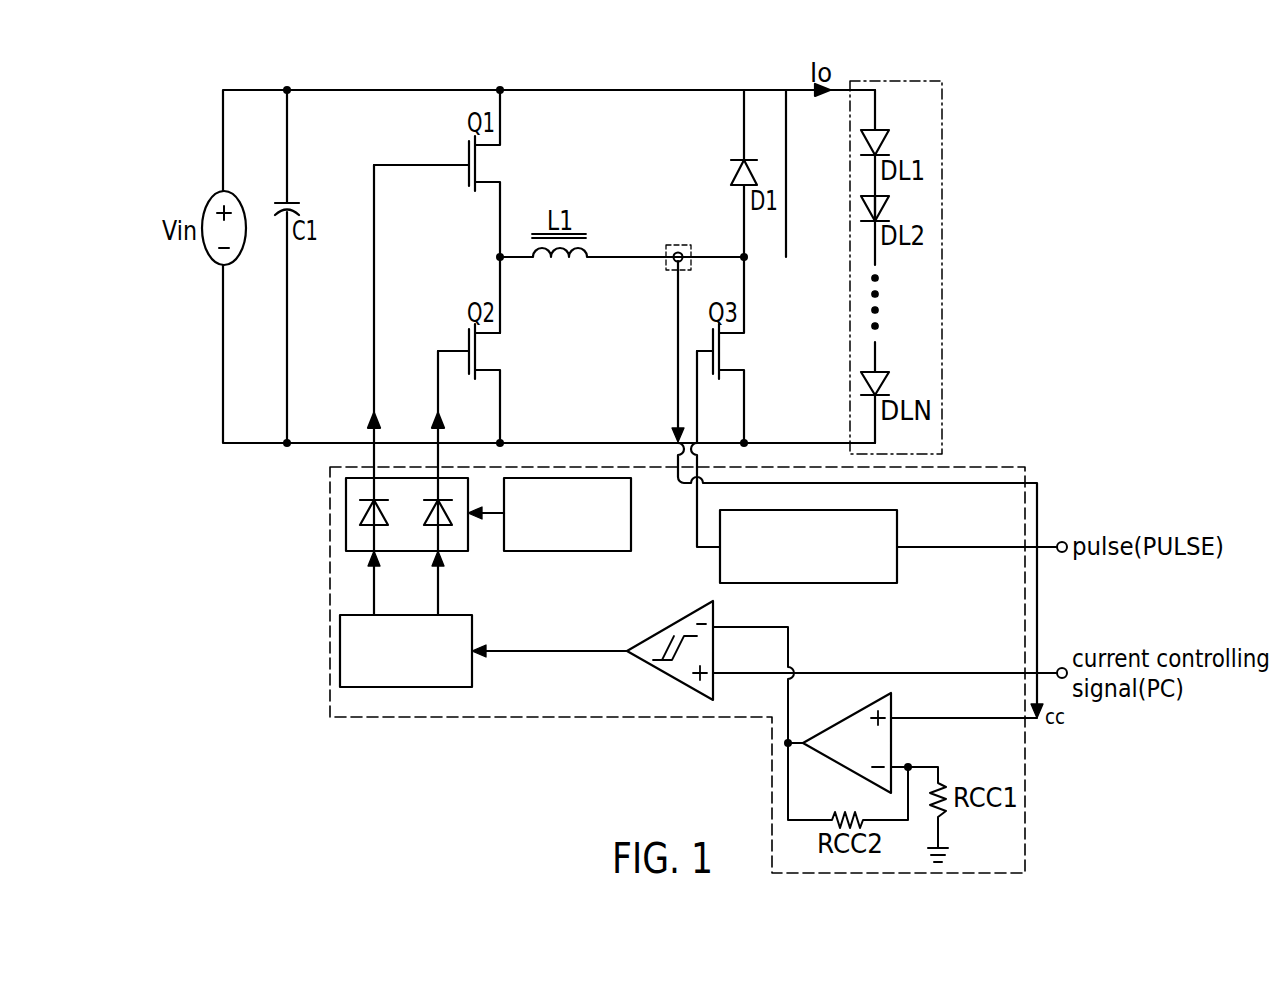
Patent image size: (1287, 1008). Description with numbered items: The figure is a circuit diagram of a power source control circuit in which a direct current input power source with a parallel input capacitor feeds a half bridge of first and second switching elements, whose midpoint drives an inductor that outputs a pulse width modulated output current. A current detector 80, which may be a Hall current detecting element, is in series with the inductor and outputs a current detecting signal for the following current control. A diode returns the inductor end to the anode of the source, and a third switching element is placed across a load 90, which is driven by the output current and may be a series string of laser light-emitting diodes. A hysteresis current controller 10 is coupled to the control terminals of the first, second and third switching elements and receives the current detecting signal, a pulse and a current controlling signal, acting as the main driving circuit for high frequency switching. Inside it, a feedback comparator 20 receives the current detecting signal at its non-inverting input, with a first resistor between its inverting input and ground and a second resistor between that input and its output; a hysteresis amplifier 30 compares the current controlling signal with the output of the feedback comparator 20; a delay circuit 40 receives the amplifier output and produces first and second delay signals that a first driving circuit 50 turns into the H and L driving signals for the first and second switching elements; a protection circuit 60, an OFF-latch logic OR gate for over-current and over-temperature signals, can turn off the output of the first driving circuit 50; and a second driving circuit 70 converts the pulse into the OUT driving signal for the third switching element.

The hysteresis current controller 10 is at (330, 585).
The feedback comparator 20 is at (850, 772).
The hysteresis amplifier 30 is at (672, 676).
The delay circuit 40 is at (472, 676).
The first driving circuit 50 is at (346, 510).
The protection circuit 60 is at (570, 552).
The second driving circuit 70 is at (897, 566).
The current detector 80 is at (677, 245).
The load 90 is at (943, 111).